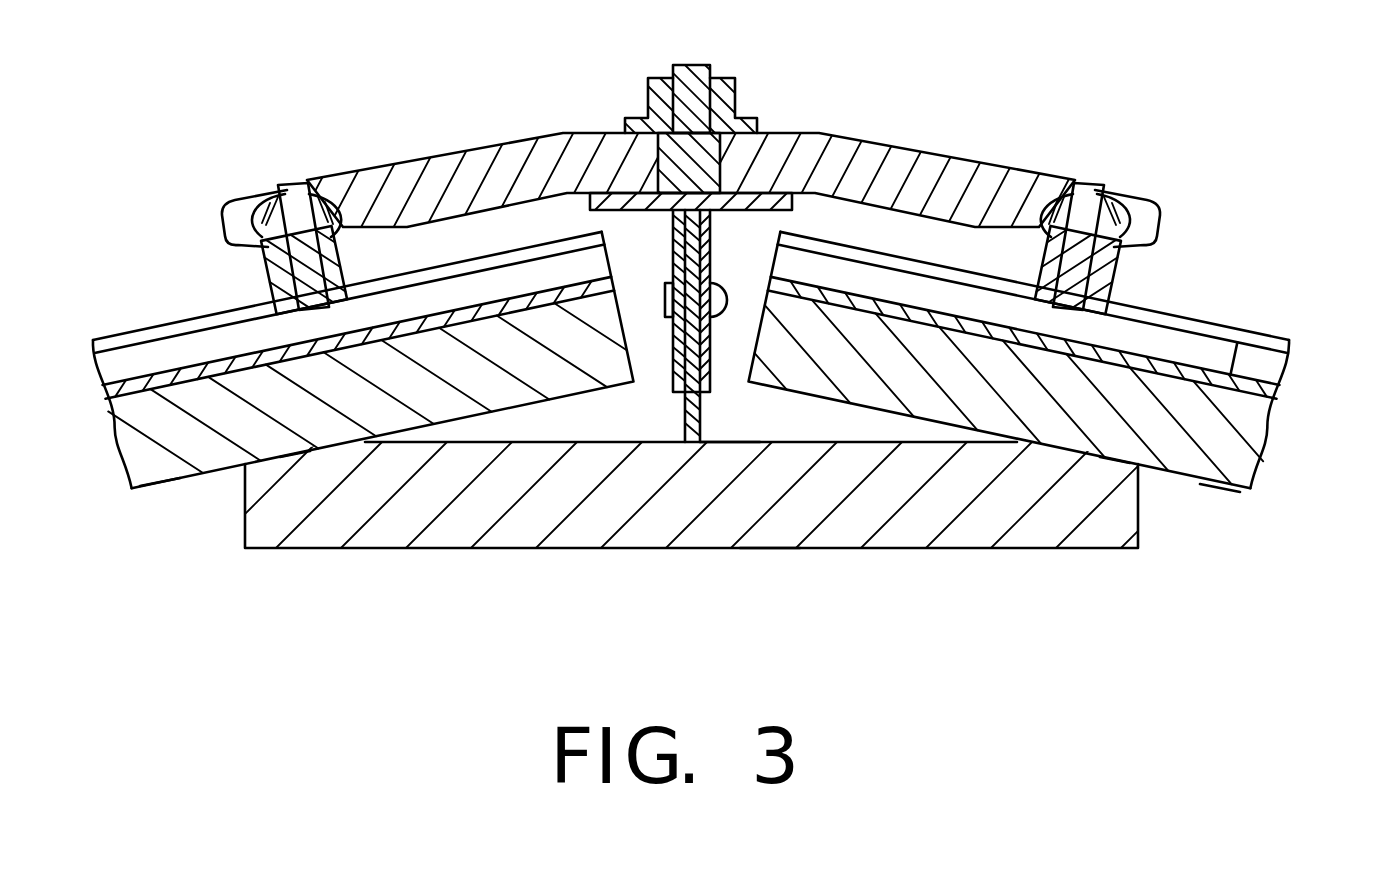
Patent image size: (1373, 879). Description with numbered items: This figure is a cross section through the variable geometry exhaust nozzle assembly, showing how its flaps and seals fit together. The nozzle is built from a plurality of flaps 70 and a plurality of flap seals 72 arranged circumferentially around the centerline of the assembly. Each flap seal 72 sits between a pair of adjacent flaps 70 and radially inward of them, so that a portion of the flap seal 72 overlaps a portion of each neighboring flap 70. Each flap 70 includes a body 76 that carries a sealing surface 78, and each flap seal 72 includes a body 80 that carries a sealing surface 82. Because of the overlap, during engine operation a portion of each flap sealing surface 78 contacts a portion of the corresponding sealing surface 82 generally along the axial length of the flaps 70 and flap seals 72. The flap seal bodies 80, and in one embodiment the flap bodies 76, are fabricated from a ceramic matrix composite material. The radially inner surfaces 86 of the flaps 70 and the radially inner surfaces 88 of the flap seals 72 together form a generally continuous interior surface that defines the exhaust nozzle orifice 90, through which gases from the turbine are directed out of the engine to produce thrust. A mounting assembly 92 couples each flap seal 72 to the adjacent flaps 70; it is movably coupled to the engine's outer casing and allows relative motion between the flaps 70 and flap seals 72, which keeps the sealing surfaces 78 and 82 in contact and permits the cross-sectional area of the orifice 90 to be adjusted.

The flap 70 is at (133, 415).
The flap seal 72 is at (447, 540).
The body 76 is at (200, 408).
The sealing surface 78 is at (293, 460).
The body 80 is at (580, 525).
The sealing surface 82 is at (312, 447).
The radially inner surface 86 is at (163, 490).
The radially inner surface 88 is at (767, 550).
The exhaust nozzle orifice 90 is at (700, 631).
The mounting assembly 92 is at (468, 124).